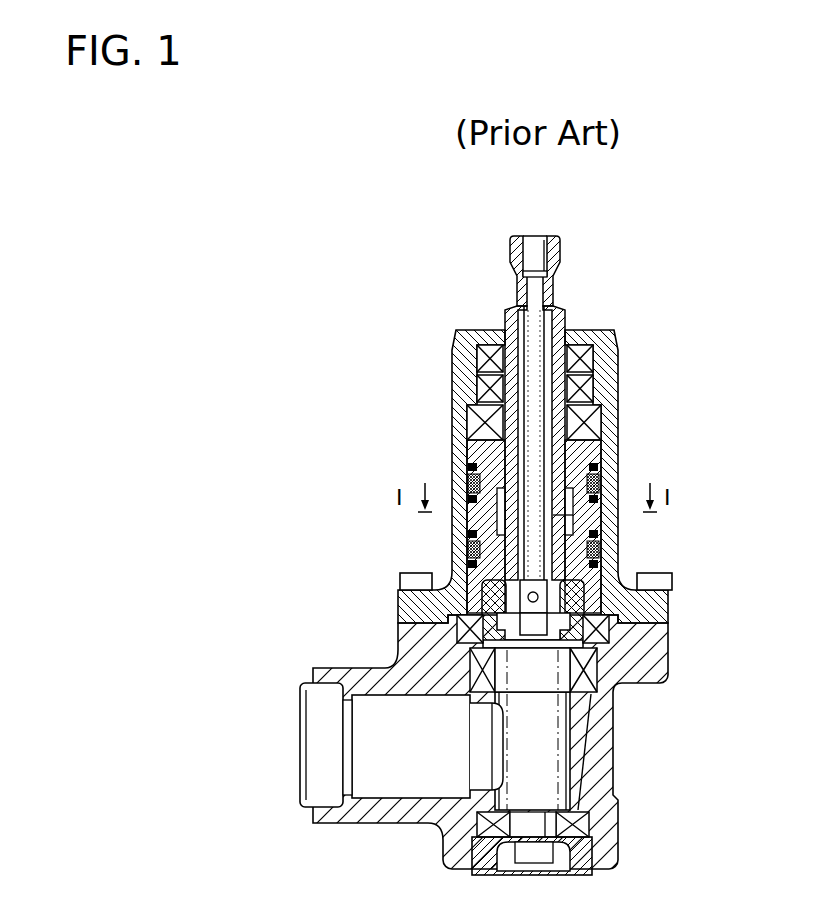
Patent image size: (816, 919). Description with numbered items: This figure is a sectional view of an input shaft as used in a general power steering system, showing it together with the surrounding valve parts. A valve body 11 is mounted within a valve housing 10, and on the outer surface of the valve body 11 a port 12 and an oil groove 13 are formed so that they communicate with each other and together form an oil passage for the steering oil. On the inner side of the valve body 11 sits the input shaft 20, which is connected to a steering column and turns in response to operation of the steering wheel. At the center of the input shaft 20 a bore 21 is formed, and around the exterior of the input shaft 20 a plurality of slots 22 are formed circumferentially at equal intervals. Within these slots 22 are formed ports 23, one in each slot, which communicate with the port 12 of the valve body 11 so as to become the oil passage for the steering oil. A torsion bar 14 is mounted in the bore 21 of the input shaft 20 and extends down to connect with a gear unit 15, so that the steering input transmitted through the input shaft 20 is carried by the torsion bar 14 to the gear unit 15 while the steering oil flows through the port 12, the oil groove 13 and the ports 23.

The valve housing 10 is at (462, 380).
The valve body 11 is at (473, 452).
The port 12 is at (600, 490).
The oil groove 13 is at (578, 516).
The torsion bar 14 is at (537, 327).
The gear unit 15 is at (576, 745).
The input shaft 20 is at (496, 239).
The bore 21 is at (543, 430).
The slots 22 is at (500, 532).
The ports 23 is at (470, 477).